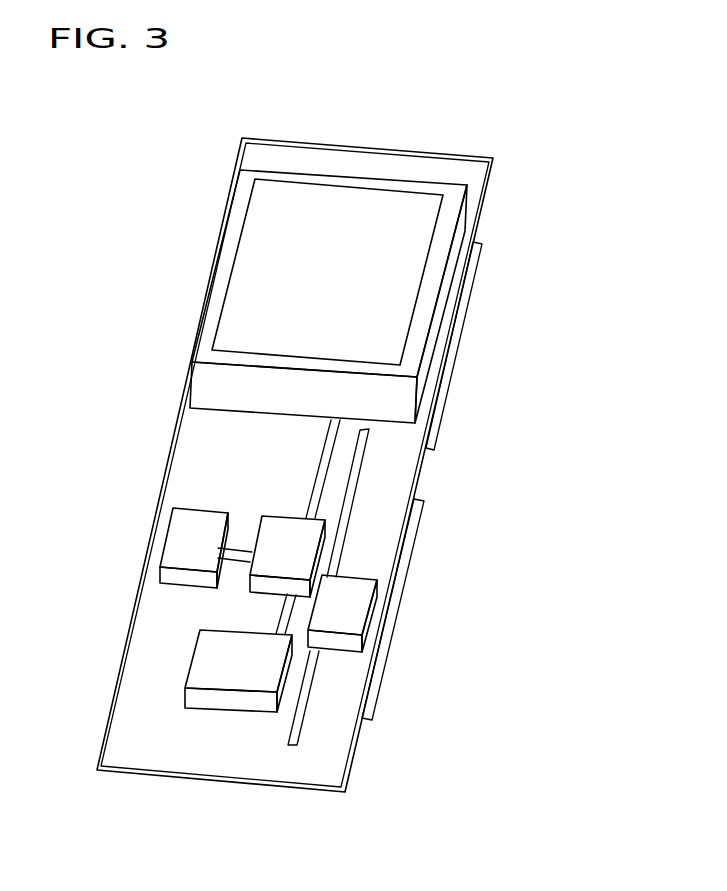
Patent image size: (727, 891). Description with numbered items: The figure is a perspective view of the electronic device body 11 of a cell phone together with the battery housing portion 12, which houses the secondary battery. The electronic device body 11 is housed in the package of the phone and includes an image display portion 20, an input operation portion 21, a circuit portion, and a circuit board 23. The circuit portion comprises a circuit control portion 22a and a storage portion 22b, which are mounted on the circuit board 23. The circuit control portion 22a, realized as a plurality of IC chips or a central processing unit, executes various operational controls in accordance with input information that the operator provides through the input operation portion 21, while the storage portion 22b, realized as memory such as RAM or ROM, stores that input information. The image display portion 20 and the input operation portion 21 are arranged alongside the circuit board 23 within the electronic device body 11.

The electronic device body 11 is at (508, 484).
The battery housing portion 12 is at (397, 182).
The image display portion 20 is at (387, 633).
The input operation portion 21 is at (462, 310).
The circuit control portion 22a is at (222, 672).
The storage portion 22b is at (200, 548).
The circuit board 23 is at (202, 447).